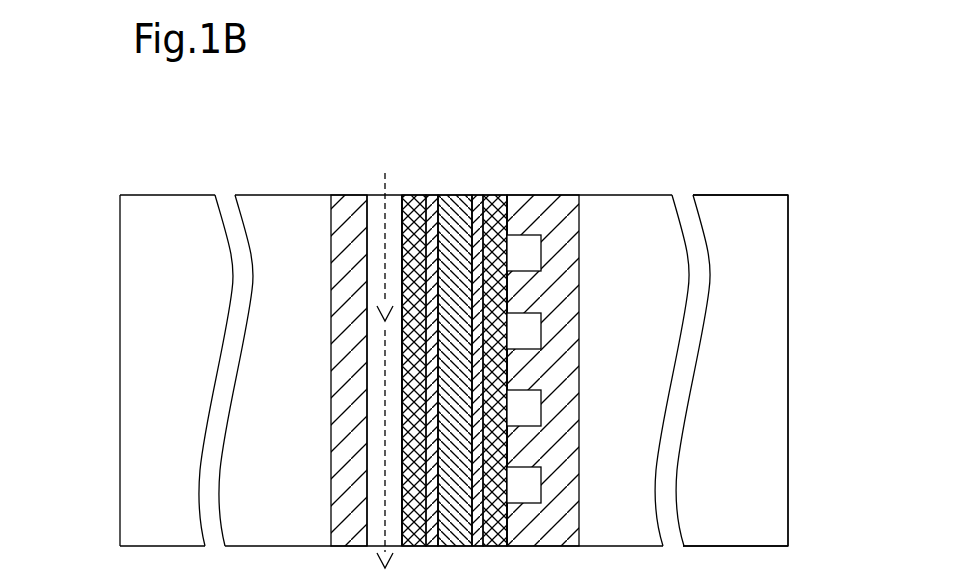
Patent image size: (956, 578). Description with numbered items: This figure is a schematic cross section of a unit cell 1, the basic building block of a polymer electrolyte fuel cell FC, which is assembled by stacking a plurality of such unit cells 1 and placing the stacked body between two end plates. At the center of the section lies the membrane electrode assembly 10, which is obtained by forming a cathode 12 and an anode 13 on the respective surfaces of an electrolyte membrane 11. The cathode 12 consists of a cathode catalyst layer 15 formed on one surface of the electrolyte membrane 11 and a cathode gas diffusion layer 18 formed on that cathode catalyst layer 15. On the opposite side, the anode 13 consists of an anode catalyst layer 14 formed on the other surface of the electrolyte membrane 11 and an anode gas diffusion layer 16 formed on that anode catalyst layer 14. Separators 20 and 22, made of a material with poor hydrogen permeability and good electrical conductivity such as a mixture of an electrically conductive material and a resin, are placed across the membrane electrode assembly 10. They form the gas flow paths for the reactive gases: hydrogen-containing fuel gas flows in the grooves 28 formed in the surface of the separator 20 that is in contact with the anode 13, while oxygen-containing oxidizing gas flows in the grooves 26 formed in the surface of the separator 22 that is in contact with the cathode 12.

The unit cell 1 is at (286, 151).
The polymer electrolyte fuel cell FC is at (740, 180).
The membrane electrode assembly 10 is at (373, 112).
The electrolyte membrane 11 is at (451, 197).
The cathode 12 is at (473, 143).
The anode 13 is at (372, 143).
The anode catalyst layer 14 is at (432, 197).
The cathode catalyst layer 15 is at (477, 197).
The anode gas diffusion layer 16 is at (414, 197).
The cathode gas diffusion layer 18 is at (498, 197).
The separator 20 is at (344, 205).
The separator 22 is at (551, 210).
The grooves 26 is at (536, 479).
The grooves 28 is at (378, 488).